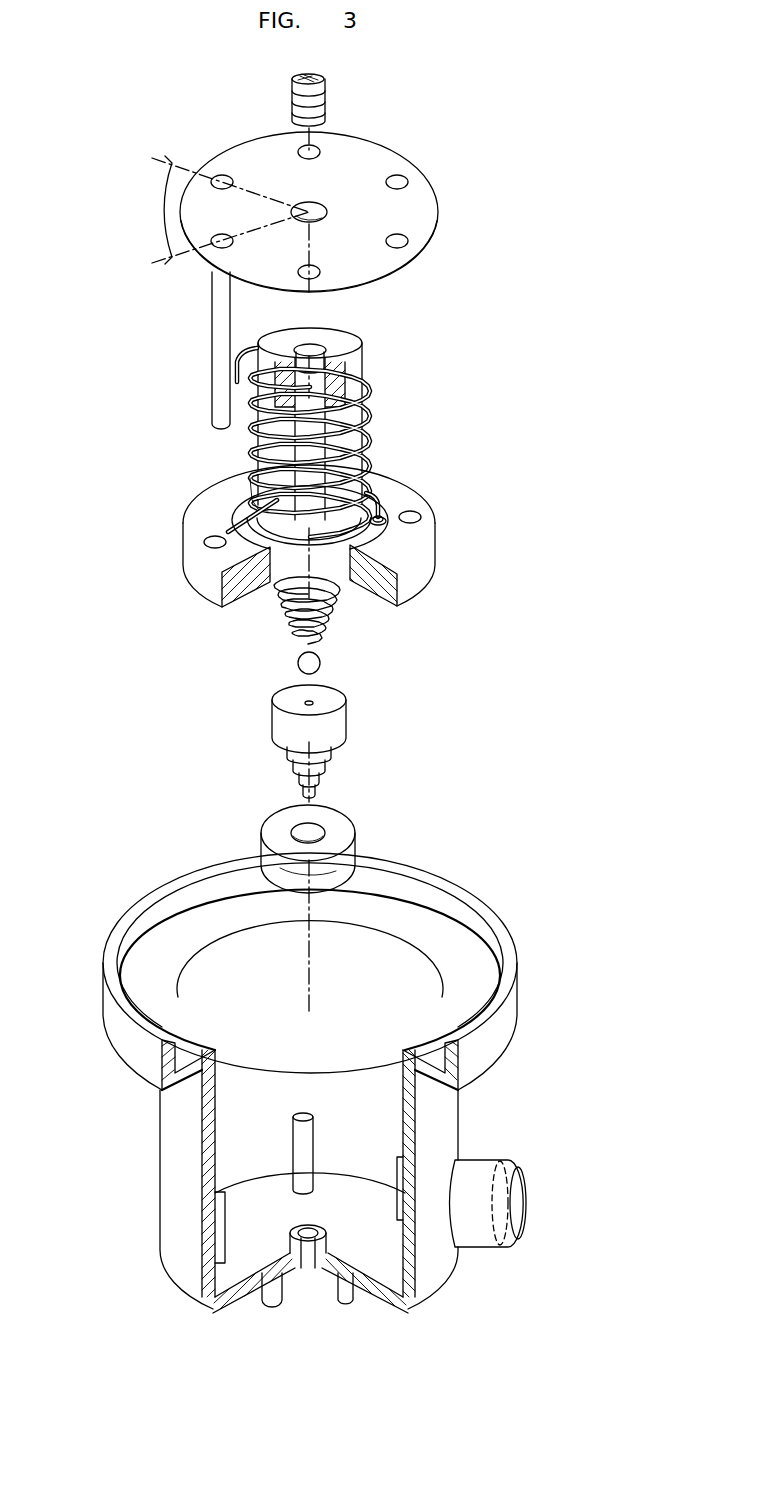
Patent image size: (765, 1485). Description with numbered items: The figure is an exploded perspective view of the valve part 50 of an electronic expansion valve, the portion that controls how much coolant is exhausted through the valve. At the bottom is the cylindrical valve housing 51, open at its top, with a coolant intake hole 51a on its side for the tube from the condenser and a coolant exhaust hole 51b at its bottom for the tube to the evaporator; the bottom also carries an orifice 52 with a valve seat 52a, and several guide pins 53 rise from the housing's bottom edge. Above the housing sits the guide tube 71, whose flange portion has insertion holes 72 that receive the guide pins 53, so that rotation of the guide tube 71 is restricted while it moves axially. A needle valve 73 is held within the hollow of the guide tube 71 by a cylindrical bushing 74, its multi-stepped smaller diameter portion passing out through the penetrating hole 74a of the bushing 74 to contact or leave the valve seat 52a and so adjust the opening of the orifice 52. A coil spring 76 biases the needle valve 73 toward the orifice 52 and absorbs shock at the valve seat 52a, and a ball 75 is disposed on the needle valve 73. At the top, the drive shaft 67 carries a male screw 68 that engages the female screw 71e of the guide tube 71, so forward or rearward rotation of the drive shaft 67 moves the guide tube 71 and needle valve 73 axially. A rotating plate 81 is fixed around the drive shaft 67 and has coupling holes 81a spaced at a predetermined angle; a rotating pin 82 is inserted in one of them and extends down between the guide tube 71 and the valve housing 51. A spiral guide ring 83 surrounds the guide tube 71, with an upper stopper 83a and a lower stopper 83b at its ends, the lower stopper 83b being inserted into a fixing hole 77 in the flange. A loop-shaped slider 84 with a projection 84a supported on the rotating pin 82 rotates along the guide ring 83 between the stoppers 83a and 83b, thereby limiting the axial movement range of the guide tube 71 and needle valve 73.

The valve part 50 is at (548, 671).
The valve housing 51 is at (448, 1135).
The coolant intake hole 51a is at (520, 1203).
The coolant exhaust hole 51b is at (288, 1306).
The orifice 52 is at (311, 1256).
The valve seat 52a is at (290, 1237).
The guide pins 53 is at (311, 1142).
The drive shaft 67 is at (320, 72).
The male screw 68 is at (324, 90).
The guide tube 71 is at (366, 424).
The female screw 71e is at (318, 350).
The insertion holes 72 is at (418, 514).
The needle valve 73 is at (358, 726).
The cylindrical bushing 74 is at (348, 832).
The penetrating hole 74a is at (319, 830).
The ball 75 is at (321, 663).
The coil spring 76 is at (338, 608).
The fixing hole 77 is at (386, 524).
The rotating plate 81 is at (427, 205).
The coupling holes 81a is at (398, 183).
The rotating pin 82 is at (217, 328).
The spiral guide ring 83 is at (366, 378).
The upper stopper 83a is at (235, 372).
The lower stopper 83b is at (380, 492).
The slider 84 is at (250, 478).
The projection 84a is at (226, 530).